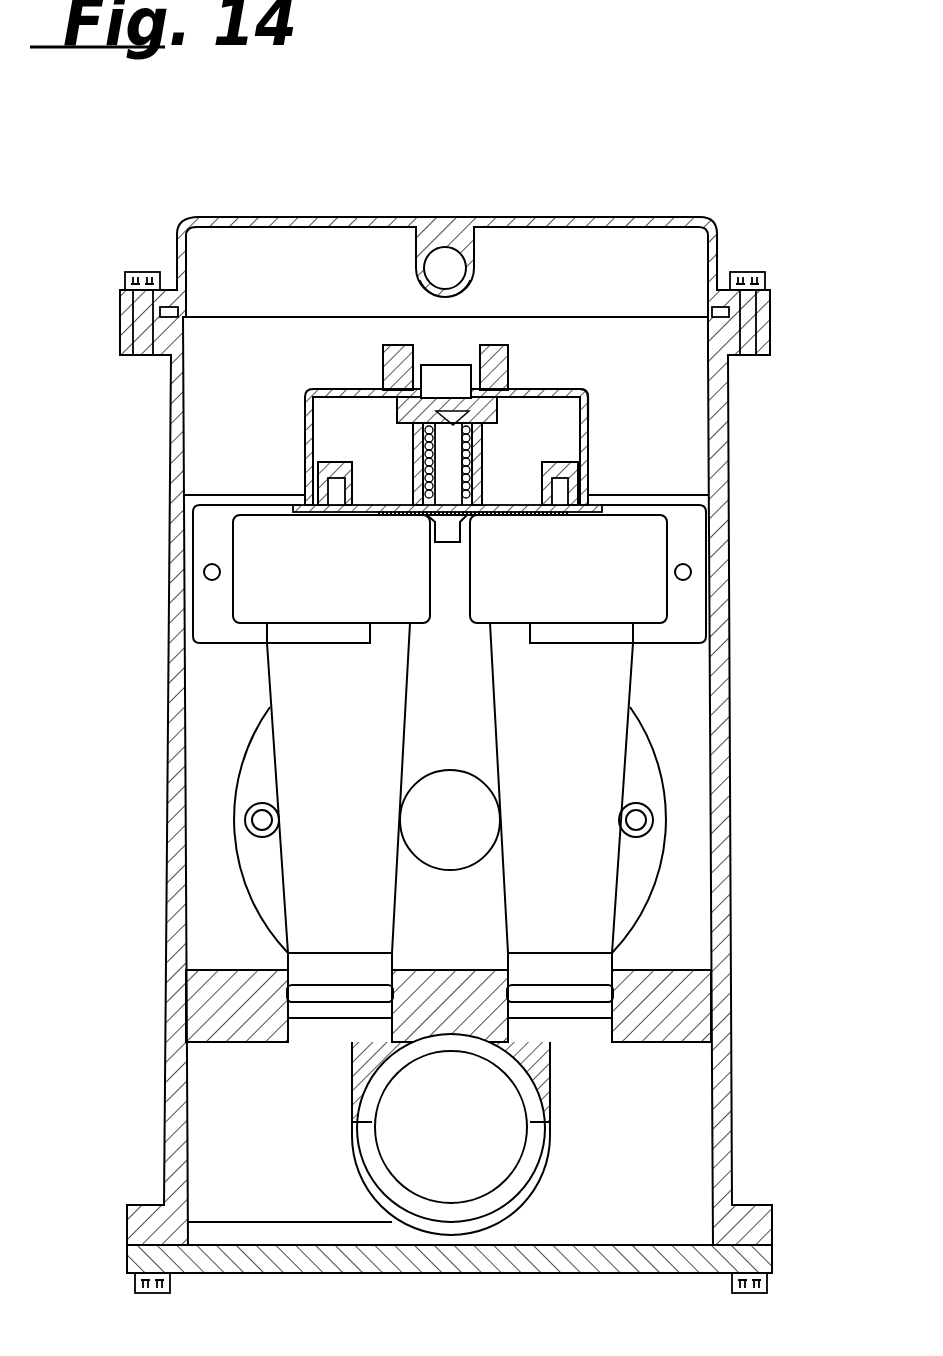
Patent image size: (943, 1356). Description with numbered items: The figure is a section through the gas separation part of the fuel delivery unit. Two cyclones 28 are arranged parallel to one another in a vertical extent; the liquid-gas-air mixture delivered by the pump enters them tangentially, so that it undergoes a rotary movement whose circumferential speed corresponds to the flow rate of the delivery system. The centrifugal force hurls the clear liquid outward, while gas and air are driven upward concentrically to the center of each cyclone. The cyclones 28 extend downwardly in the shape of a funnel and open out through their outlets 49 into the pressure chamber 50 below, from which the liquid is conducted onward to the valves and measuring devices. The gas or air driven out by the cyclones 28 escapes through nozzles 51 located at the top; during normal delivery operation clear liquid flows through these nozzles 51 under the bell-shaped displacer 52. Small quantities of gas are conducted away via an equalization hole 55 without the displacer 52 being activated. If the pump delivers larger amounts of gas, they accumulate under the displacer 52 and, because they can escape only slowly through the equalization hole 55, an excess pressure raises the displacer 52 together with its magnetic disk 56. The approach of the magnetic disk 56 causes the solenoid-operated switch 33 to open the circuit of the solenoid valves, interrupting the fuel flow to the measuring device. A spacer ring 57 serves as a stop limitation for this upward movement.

The cyclones 28 is at (314, 812).
The solenoid-operated switch 33 is at (444, 266).
The outlets 49 is at (585, 995).
The pressure chamber 50 is at (635, 1165).
The nozzles 51 is at (565, 462).
The displacer 52 is at (538, 390).
The equalization hole 55 is at (578, 390).
The magnetic disk 56 is at (445, 379).
The spacer ring 57 is at (390, 365).